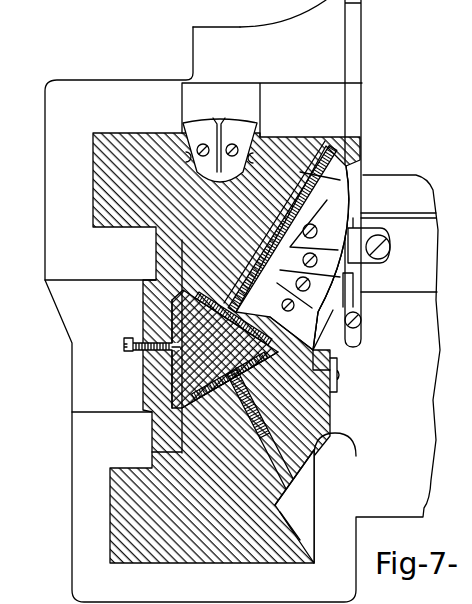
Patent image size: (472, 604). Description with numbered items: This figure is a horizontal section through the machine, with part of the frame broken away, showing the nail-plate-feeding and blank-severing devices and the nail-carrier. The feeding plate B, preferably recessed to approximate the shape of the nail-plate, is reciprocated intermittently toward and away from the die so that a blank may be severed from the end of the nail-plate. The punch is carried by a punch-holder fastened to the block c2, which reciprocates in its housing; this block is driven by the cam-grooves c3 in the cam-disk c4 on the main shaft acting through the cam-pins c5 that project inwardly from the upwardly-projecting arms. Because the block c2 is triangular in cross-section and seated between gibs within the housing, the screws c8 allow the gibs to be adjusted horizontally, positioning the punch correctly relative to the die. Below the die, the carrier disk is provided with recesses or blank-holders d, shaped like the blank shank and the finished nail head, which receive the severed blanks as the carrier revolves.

The plate B is at (300, 256).
The recesses or blank-holders d is at (219, 116).
The block c2 is at (205, 294).
The cam-grooves c3 is at (222, 408).
The cam-disk c4 is at (268, 228).
The cam-pins c5 is at (272, 426).
The screws c8 is at (137, 338).